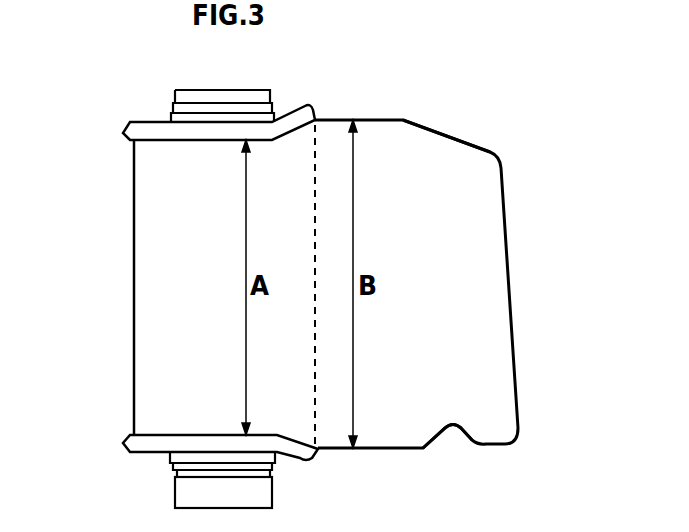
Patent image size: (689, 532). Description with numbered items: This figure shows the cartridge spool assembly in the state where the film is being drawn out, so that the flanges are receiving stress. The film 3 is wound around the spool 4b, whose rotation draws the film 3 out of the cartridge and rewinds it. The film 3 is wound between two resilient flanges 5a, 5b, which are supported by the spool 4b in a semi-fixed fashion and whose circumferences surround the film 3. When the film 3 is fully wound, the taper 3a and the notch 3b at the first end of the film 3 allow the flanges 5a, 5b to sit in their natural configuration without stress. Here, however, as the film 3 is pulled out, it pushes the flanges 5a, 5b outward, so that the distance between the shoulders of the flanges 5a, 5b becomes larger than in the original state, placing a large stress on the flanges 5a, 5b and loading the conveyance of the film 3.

The film 3 is at (483, 247).
The taper 3a is at (455, 138).
The notch 3b is at (445, 432).
The resilient flange 5a is at (309, 117).
The resilient flange 5b is at (305, 459).
The spool 4b is at (182, 490).